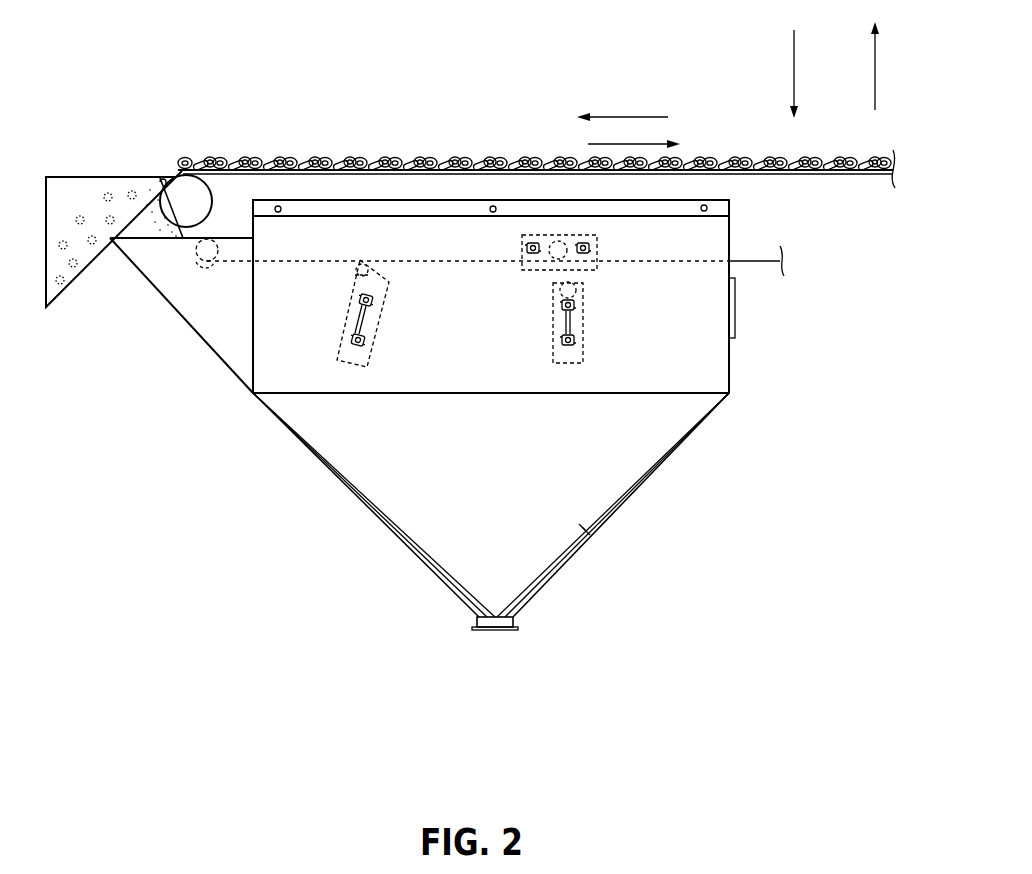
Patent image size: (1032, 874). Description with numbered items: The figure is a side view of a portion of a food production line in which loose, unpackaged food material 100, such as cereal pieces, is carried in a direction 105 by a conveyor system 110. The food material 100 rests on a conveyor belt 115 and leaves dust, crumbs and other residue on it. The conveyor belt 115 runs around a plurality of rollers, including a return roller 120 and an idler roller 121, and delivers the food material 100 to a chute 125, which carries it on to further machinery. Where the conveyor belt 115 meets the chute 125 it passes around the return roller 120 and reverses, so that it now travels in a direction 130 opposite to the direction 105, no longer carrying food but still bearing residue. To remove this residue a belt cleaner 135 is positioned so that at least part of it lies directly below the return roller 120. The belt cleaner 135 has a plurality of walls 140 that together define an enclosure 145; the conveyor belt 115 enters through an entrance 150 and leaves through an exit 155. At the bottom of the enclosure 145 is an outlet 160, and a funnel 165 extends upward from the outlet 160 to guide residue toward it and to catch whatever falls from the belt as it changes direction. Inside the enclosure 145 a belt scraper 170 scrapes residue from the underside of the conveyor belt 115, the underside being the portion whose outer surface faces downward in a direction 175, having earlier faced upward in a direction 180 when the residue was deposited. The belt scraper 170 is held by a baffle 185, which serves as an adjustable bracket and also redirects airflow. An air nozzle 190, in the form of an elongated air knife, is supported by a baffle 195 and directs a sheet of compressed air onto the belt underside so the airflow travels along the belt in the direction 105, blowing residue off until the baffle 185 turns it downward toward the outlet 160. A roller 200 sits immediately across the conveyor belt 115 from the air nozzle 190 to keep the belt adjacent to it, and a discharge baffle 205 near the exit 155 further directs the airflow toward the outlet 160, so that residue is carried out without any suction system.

The food material 100 is at (304, 160).
The direction 105 is at (628, 116).
The conveyor system 110 is at (813, 178).
The conveyor belt 115 is at (862, 176).
The return roller 120 is at (184, 173).
The idler roller 121 is at (208, 265).
The chute 125 is at (88, 187).
The direction 130 is at (598, 144).
The belt cleaner 135 is at (446, 451).
The walls 140 is at (707, 386).
The enclosure 145 is at (720, 397).
The entrance 150 is at (158, 240).
The exit 155 is at (729, 242).
The outlet 160 is at (496, 630).
The funnel 165 is at (643, 463).
The belt scraper 170 is at (356, 277).
The direction 175 is at (794, 58).
The direction 180 is at (875, 88).
The baffle 185 is at (344, 325).
The air nozzle 190 is at (582, 264).
The baffle 195 is at (585, 340).
The roller 200 is at (568, 236).
The discharge baffle 205 is at (726, 280).